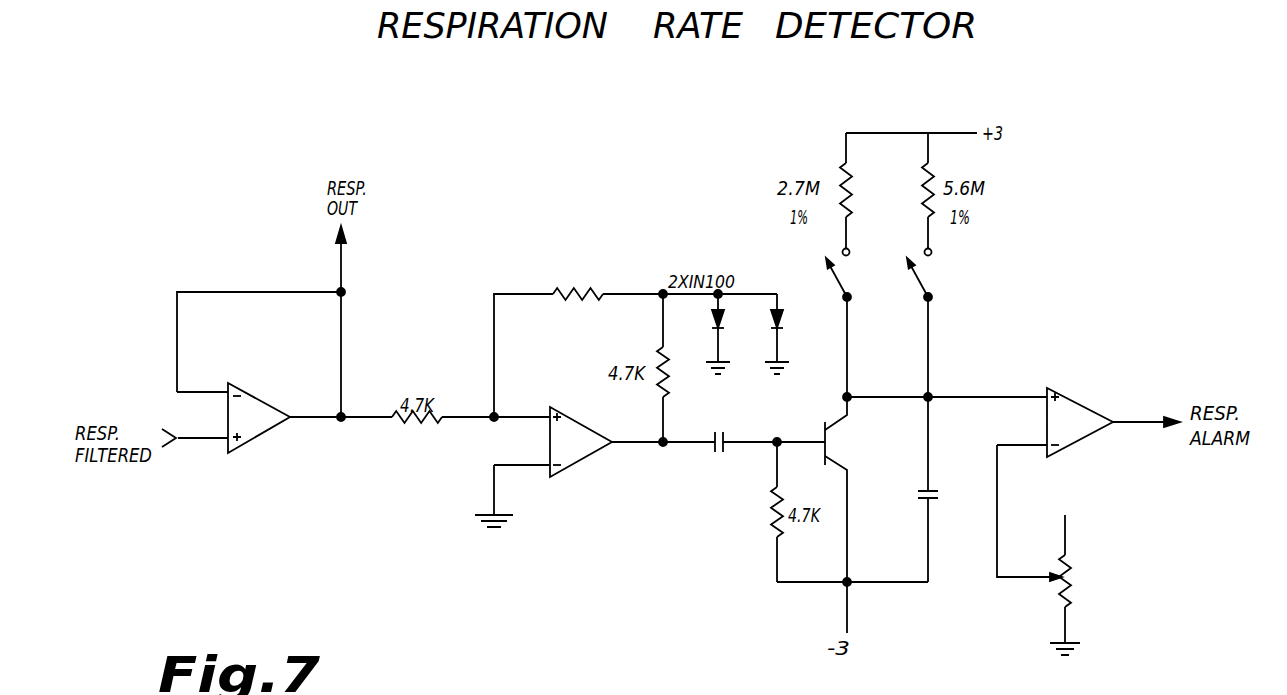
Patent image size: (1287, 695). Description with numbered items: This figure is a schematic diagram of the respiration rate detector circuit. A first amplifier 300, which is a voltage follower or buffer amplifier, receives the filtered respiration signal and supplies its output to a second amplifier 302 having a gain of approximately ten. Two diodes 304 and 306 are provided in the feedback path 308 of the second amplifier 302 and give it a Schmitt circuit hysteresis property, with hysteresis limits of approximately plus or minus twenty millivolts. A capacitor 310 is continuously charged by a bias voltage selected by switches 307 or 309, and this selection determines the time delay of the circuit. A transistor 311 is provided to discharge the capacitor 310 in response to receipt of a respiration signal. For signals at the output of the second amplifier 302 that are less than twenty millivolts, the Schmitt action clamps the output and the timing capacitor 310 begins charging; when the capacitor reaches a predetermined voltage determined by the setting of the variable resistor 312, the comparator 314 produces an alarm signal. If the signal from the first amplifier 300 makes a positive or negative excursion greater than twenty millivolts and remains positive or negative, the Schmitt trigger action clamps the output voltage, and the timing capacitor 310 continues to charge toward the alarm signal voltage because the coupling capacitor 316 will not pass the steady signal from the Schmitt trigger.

The first amplifier 300 is at (270, 429).
The second amplifier 302 is at (590, 456).
The diode 304 is at (710, 318).
The diode 306 is at (781, 317).
The switch 307 is at (931, 249).
The feedback path 308 is at (625, 294).
The switch 309 is at (849, 249).
The capacitor 310 is at (930, 496).
The transistor 311 is at (827, 437).
The variable resistor 312 is at (1065, 602).
The comparator 314 is at (1092, 408).
The coupling capacitor 316 is at (725, 436).